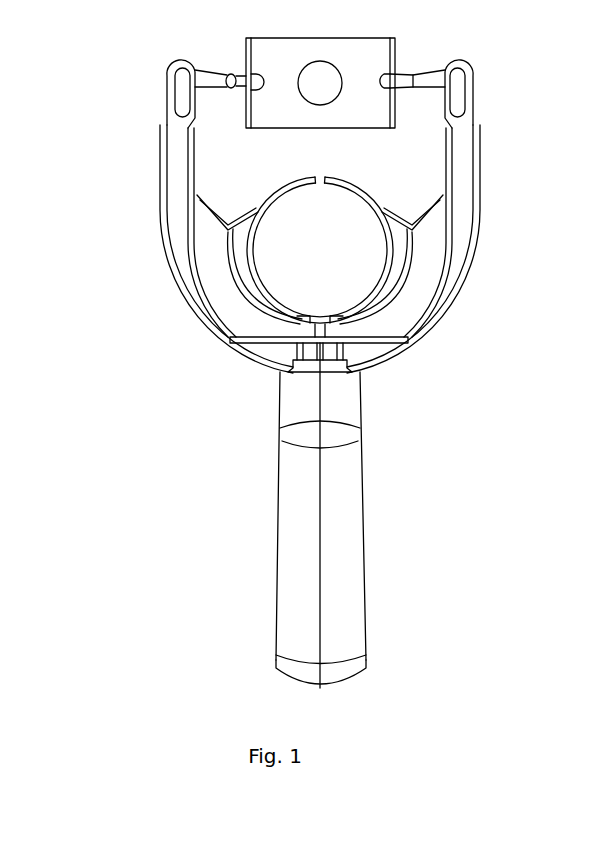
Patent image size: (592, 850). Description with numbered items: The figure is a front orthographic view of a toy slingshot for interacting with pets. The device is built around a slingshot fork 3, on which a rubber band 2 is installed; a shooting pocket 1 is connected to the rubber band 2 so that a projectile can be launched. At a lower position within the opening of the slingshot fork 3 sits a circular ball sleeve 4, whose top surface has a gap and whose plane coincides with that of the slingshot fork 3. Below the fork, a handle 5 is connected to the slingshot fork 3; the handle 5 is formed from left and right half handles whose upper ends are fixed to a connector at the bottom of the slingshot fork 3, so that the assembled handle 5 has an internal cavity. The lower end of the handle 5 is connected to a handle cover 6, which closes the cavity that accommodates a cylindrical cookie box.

The shooting pocket 1 is at (247, 40).
The rubber band 2 is at (217, 72).
The slingshot fork 3 is at (183, 207).
The ball sleeve 4 is at (247, 260).
The handle 5 is at (312, 537).
The handle cover 6 is at (298, 670).